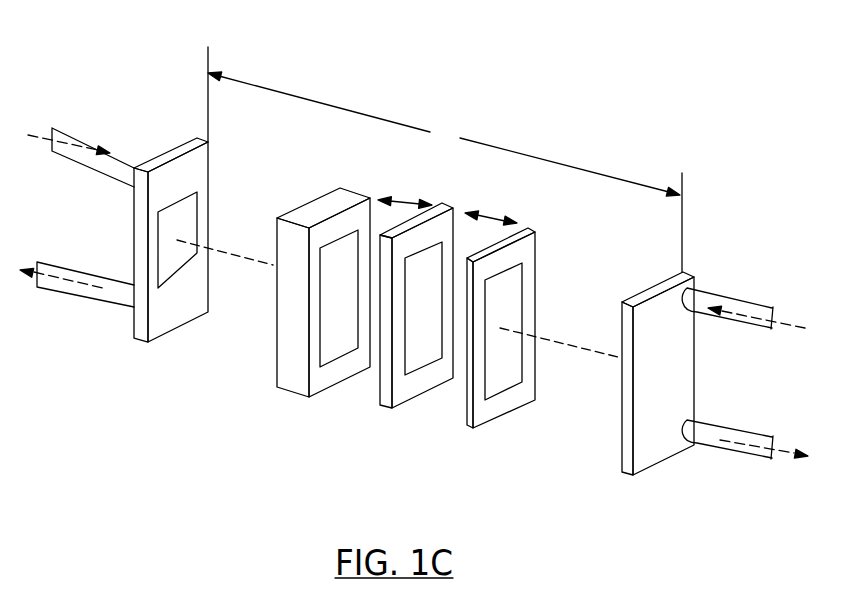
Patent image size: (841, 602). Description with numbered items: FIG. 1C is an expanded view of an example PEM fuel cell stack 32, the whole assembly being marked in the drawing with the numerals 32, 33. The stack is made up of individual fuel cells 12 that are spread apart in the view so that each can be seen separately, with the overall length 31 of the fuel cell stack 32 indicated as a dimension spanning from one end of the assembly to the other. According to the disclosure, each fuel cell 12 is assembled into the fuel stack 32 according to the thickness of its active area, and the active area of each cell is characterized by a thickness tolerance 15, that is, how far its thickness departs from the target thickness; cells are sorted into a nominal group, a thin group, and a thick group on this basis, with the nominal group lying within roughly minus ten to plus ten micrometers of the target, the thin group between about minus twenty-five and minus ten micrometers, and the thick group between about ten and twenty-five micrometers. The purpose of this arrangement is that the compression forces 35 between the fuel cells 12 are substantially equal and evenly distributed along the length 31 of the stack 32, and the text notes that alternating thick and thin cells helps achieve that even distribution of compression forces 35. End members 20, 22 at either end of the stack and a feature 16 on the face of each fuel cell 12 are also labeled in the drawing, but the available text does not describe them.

The fuel cell 12 is at (314, 397).
The thickness tolerance 15 is at (237, 253).
The cell window / recess 16 is at (338, 303).
The first end manifold plate 20 is at (185, 140).
The second end manifold plate 22 is at (673, 275).
The length of the fuel cell stack 31 is at (444, 134).
The fuel cell stack 32 is at (639, 54).
The cell stack assembly 33 is at (612, 82).
The compression forces 35 is at (407, 198).